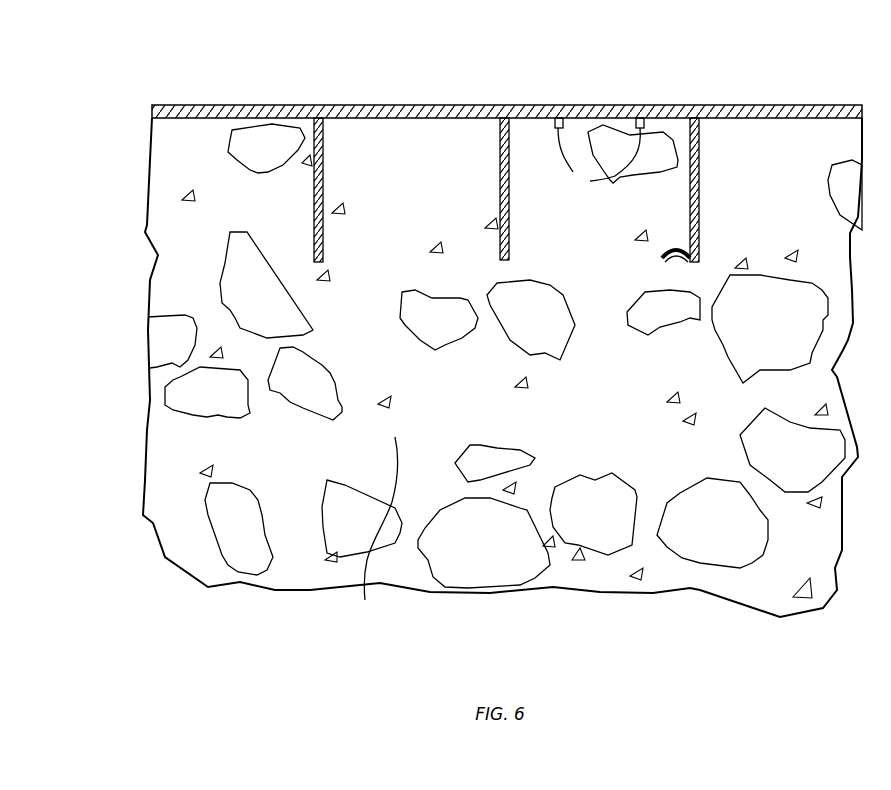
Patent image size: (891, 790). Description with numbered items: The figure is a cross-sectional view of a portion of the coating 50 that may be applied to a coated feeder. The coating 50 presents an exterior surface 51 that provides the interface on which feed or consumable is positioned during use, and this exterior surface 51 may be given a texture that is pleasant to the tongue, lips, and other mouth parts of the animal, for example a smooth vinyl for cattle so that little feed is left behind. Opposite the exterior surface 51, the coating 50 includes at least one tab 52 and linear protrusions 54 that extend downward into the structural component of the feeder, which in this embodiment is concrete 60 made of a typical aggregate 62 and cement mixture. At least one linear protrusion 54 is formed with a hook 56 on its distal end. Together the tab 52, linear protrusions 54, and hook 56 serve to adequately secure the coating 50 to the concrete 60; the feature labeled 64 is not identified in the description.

The coating 50 is at (225, 61).
The exterior surface 51 is at (672, 104).
The tab 52 is at (600, 178).
The linear protrusion 54 is at (313, 236).
The hook 56 is at (672, 248).
The concrete 60 is at (129, 466).
The aggregate 62 is at (300, 383).
The crack 64 is at (375, 530).